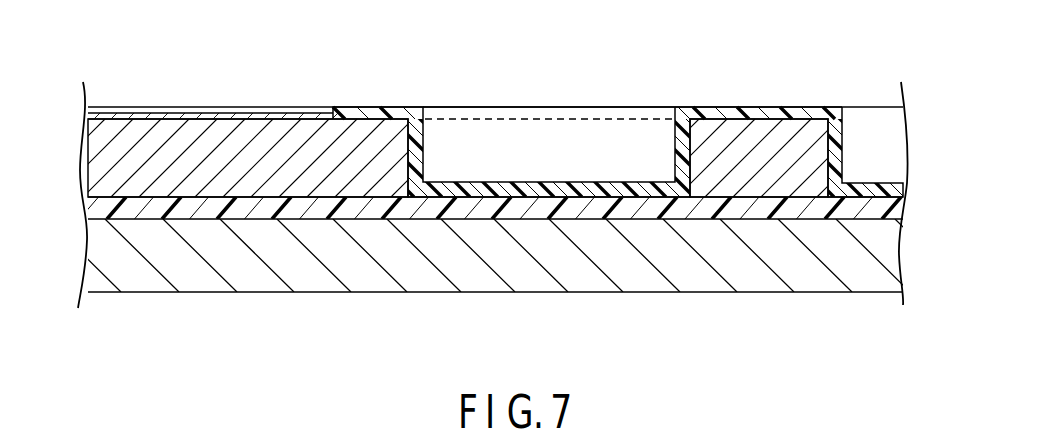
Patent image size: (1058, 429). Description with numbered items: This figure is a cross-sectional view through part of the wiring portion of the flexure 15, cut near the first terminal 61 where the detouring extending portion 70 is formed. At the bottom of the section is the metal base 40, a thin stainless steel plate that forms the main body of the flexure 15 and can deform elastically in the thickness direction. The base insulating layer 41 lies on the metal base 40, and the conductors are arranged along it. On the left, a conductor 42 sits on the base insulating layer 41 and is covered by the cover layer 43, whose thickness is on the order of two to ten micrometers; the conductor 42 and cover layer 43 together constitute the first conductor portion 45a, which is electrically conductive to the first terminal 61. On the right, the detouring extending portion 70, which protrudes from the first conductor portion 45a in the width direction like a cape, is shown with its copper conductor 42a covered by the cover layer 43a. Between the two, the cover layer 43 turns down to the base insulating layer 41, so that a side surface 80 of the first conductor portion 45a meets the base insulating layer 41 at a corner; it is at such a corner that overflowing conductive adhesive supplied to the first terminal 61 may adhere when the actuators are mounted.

The flexure 15 is at (707, 305).
The metal base 40 is at (582, 277).
The base insulating layer 41 is at (317, 208).
The conductor 42 is at (142, 152).
The conductor 42a is at (797, 137).
The cover layer 43 is at (375, 105).
The cover layer 43a is at (710, 113).
The first conductor portion 45a is at (588, 106).
The first terminal 61 is at (217, 113).
The detouring extending portion 70 is at (770, 107).
The side surface 80 is at (491, 150).